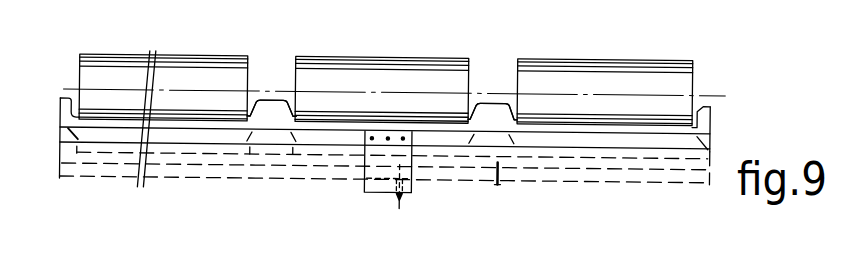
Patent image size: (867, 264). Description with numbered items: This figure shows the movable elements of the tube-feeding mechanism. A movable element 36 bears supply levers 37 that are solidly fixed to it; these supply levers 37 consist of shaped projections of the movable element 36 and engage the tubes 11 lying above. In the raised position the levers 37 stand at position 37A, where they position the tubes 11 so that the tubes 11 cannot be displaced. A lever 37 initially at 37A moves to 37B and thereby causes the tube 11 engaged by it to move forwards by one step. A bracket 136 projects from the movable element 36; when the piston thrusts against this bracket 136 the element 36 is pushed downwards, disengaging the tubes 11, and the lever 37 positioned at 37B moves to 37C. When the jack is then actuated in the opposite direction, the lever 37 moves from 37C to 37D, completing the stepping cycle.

The tube 11 is at (607, 88).
The movable element 36 is at (585, 138).
The supply lever 37 is at (489, 118).
The lever position 37A is at (485, 90).
The lever position 37B is at (272, 95).
The lever position 37C is at (262, 137).
The lever position 37D is at (497, 186).
The bracket 136 is at (388, 192).